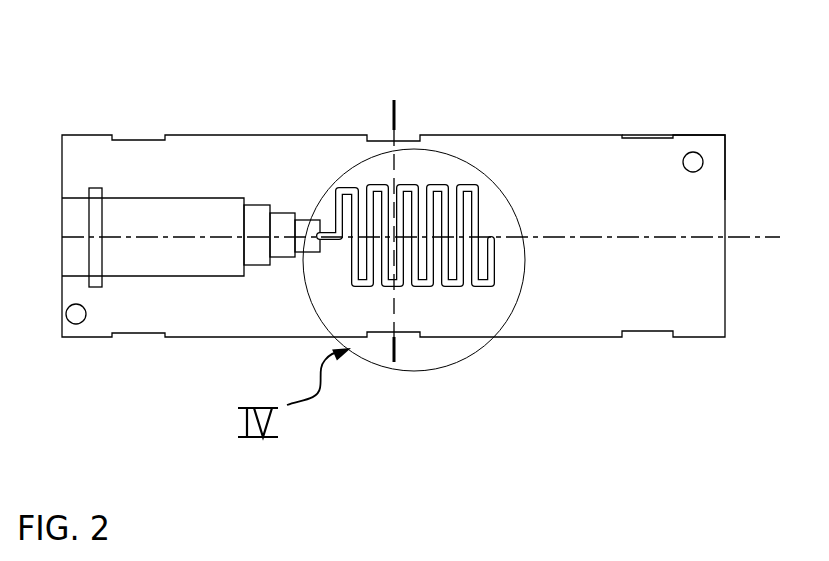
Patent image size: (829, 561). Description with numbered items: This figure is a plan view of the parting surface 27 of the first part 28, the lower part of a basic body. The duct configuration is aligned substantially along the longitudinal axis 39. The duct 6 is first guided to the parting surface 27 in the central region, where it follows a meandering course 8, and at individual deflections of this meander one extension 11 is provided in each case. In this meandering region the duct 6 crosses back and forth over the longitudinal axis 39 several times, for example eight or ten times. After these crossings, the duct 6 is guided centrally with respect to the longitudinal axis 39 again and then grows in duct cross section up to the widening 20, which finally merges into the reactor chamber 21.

The duct 6 is at (484, 285).
The meandering course 8 is at (426, 148).
The extension 11 is at (413, 236).
The widening 20 is at (282, 220).
The reactor chamber 21 is at (177, 220).
The parting surface 27 is at (601, 306).
The first part 28 is at (647, 145).
The longitudinal axis 39 is at (690, 237).